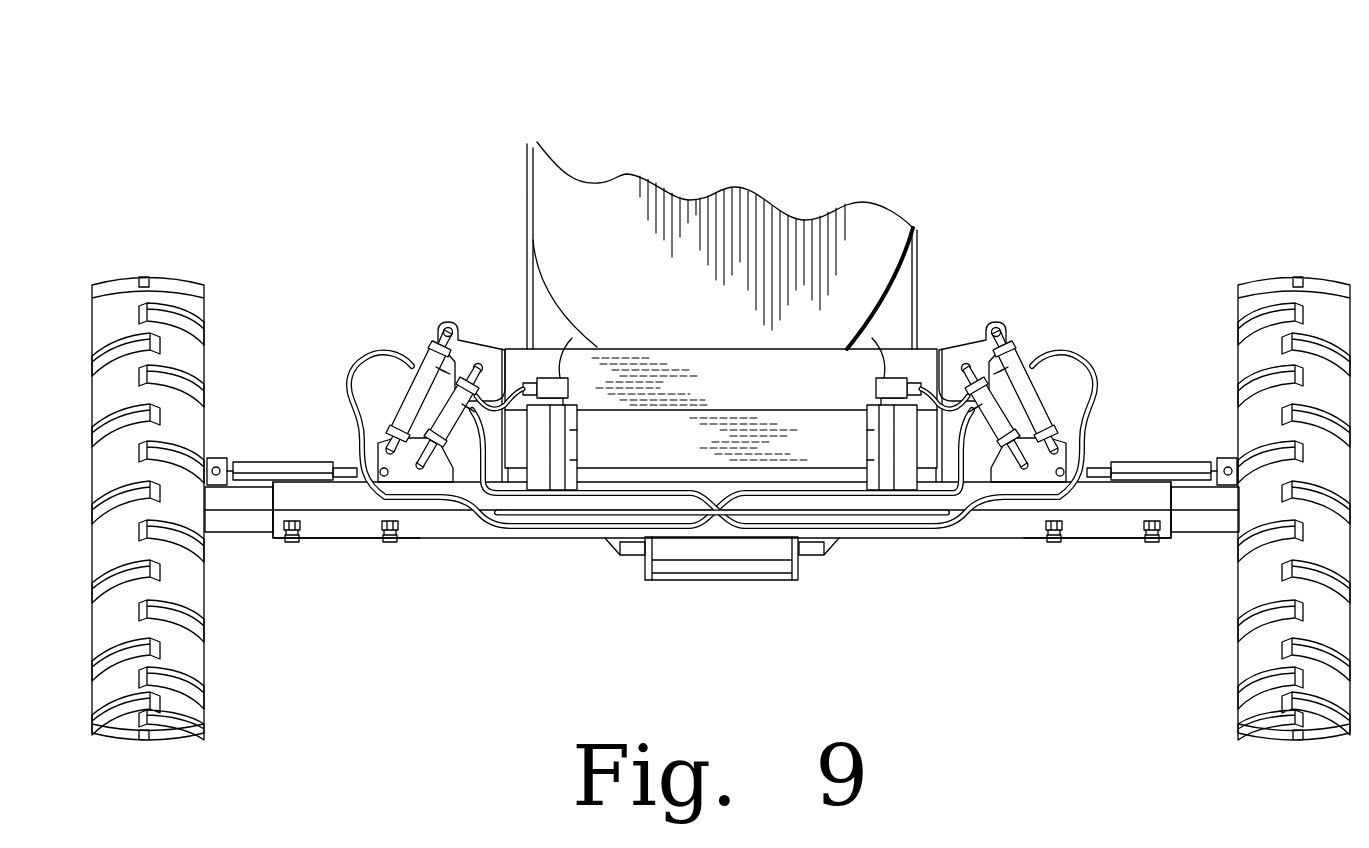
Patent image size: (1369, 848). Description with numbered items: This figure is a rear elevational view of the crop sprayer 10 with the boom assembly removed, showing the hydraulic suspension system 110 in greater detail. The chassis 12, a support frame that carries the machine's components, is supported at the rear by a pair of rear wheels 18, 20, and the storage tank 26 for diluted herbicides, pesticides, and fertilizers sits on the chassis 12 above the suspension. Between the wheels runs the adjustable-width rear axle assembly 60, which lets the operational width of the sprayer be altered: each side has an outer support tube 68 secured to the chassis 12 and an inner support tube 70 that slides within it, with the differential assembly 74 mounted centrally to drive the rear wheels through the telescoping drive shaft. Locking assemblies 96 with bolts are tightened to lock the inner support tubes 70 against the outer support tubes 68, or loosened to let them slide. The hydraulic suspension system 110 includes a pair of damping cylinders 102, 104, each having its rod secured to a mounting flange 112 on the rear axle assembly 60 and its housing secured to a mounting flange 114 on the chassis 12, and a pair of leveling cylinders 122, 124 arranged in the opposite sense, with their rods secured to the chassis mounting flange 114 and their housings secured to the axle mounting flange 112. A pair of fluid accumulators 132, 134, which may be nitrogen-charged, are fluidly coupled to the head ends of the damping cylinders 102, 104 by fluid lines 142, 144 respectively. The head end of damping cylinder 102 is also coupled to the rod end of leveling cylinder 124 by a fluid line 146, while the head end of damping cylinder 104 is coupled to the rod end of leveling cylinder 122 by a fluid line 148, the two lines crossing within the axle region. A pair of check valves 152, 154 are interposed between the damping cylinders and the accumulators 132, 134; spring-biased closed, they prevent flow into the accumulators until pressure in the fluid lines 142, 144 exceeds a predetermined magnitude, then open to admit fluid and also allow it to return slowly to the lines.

The crop sprayer 10 is at (1048, 118).
The chassis 12 is at (755, 372).
The rear wheel 18 is at (1252, 649).
The rear wheel 20 is at (186, 649).
The storage tank 26 is at (877, 218).
The rear axle assembly 60 is at (455, 532).
The outer support tube 68 is at (352, 532).
The inner support tube 70 is at (253, 532).
The differential assembly 74 is at (725, 566).
The locking assembly 96 is at (1052, 548).
The damping cylinder 102 is at (475, 348).
The damping cylinder 104 is at (991, 328).
The hydraulic suspension system 110 is at (1022, 322).
The mounting flange 112 is at (378, 450).
The mounting flange 114 is at (470, 325).
The leveling cylinder 122 is at (424, 352).
The leveling cylinder 124 is at (1022, 352).
The fluid accumulator 132 is at (580, 446).
The fluid accumulator 134 is at (880, 446).
The fluid line 142 is at (522, 357).
The fluid line 144 is at (936, 348).
The fluid line 146 is at (902, 522).
The fluid line 148 is at (540, 522).
The check valve 152 is at (566, 356).
The check valve 154 is at (880, 368).